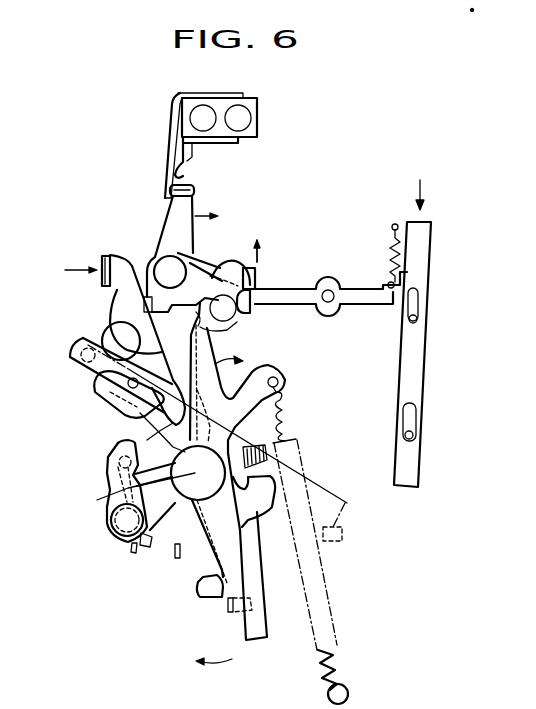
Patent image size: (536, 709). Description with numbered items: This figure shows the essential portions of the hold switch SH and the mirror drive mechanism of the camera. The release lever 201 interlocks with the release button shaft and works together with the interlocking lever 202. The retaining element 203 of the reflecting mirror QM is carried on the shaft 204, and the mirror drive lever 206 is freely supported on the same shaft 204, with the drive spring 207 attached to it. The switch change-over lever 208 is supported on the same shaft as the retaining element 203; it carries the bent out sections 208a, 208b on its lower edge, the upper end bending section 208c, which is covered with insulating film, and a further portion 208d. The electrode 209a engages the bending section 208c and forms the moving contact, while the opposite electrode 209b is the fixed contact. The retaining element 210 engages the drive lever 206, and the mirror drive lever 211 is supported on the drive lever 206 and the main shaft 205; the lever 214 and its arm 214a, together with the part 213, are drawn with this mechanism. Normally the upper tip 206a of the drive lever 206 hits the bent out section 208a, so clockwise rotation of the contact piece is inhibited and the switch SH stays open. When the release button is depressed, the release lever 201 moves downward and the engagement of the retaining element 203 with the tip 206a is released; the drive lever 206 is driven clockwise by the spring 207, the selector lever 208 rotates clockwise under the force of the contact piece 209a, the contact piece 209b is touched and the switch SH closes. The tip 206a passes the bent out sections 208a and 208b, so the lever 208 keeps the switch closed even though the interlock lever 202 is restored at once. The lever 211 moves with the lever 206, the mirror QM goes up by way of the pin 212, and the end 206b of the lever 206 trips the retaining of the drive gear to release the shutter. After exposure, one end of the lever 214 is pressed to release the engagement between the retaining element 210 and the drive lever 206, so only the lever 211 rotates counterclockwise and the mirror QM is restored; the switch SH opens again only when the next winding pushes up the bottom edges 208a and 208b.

The hold switch SH is at (255, 113).
The release lever 201 is at (413, 272).
The interlocking lever 202 is at (370, 287).
The retaining element 203 is at (262, 236).
The shaft 204 is at (170, 272).
The main shaft 205 is at (97, 500).
The mirror drive lever 206 is at (220, 276).
The upper tip 206a is at (198, 323).
The one end of the drive lever 206b is at (200, 596).
The drive spring 207 is at (313, 582).
The switch change-over lever 208 is at (168, 228).
The bent out section 208a is at (205, 317).
The bent out section 208b is at (258, 288).
The upper end bending section 208c is at (195, 190).
The lever hook 208d is at (113, 296).
The electrode 209a is at (168, 142).
The opposite electrode 209b is at (178, 170).
The retaining element 210 is at (110, 477).
The mirror drive lever 211 is at (120, 390).
The pin 212 is at (127, 380).
The stop pin 213 is at (173, 548).
The lever 214 is at (103, 344).
The ratchet lever arm 214a is at (112, 303).
The reflecting mirror QM is at (328, 503).